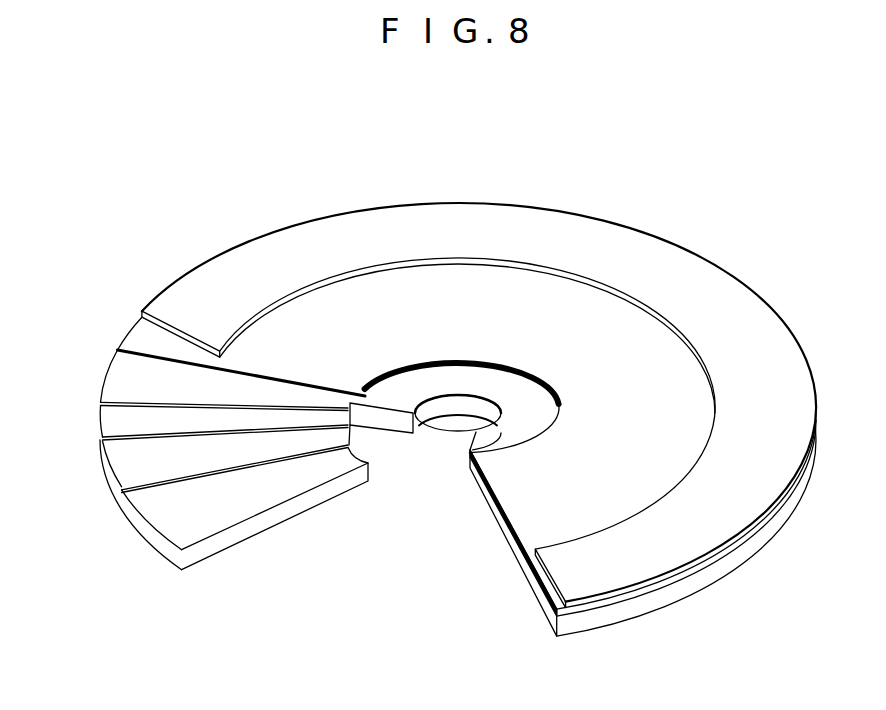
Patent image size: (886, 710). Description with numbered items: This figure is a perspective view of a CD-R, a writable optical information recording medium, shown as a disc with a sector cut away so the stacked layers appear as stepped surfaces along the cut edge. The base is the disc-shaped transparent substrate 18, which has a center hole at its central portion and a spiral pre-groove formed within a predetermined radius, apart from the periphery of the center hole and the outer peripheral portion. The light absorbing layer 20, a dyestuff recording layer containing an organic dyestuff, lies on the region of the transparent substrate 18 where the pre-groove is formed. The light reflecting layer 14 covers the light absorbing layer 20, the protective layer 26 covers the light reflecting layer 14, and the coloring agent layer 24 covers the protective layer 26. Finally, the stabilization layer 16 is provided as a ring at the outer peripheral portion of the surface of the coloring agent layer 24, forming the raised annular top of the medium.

The stabilization layer 16 is at (208, 281).
The coloring agent layer 24 is at (138, 343).
The protective layer 26 is at (122, 380).
The light reflecting layer 14 is at (117, 423).
The light absorbing layer 20 is at (137, 463).
The transparent substrate 18 is at (165, 518).